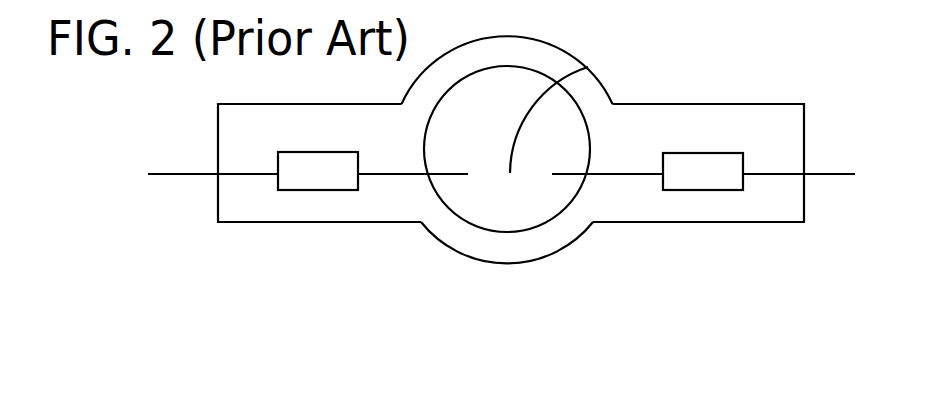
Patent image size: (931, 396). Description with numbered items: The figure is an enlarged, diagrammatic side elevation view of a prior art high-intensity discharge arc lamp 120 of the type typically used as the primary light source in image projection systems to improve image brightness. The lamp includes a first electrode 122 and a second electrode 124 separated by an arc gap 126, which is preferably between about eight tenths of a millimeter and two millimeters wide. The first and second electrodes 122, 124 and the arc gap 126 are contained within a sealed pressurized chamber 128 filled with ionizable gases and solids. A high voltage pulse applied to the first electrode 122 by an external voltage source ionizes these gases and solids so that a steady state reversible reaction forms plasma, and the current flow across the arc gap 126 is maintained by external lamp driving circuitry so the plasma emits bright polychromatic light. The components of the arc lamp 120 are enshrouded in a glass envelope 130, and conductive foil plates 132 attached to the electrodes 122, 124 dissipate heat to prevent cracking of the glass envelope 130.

The HID arc lamp 120 is at (287, 238).
The first electrode 122 is at (453, 175).
The second electrode 124 is at (568, 175).
The arc gap 126 is at (588, 67).
The sealed pressurized chamber 128 is at (527, 212).
The glass envelope 130 is at (717, 104).
The conductive foil plates 132 is at (320, 178).